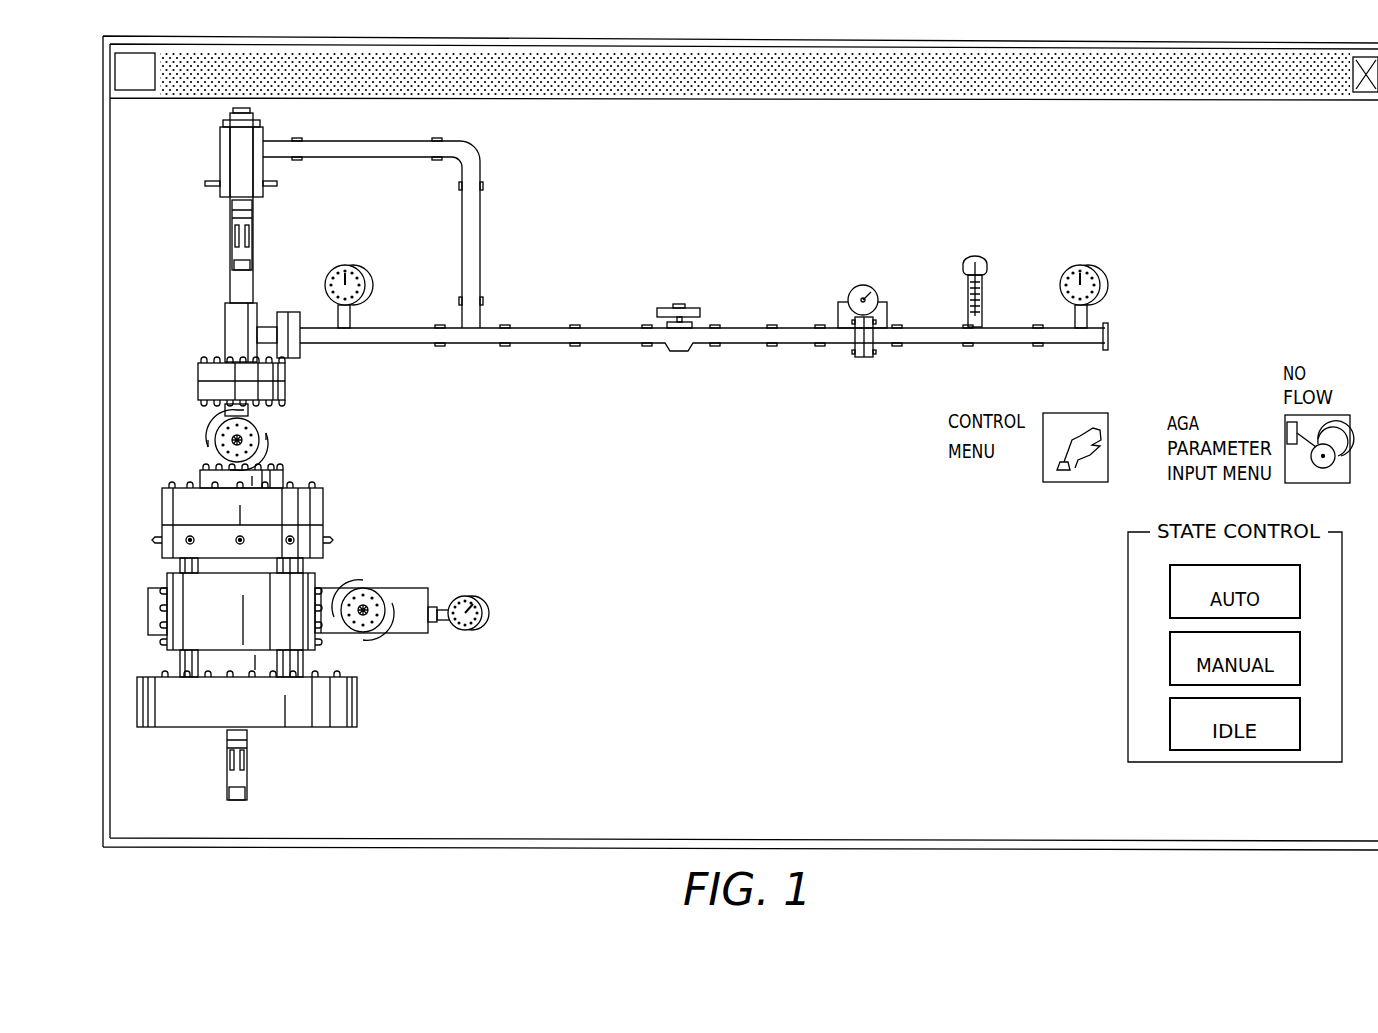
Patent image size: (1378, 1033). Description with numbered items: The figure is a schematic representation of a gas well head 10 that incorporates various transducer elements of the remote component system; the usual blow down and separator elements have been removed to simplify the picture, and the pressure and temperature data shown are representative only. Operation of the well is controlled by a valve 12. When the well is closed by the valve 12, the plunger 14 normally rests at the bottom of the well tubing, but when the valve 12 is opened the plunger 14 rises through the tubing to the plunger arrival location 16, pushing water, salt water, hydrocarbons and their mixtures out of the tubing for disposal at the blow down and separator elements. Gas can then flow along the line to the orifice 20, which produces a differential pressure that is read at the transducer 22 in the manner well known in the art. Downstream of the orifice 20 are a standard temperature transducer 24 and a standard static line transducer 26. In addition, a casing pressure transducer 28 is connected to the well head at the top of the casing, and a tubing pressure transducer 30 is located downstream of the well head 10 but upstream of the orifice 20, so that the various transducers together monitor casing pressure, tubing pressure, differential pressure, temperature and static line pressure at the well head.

The gas well head 10 is at (345, 474).
The valve 12 is at (666, 342).
The plunger 14 is at (248, 762).
The plunger arrival location 16 is at (222, 232).
The orifice 20 is at (864, 359).
The transducer 22 is at (856, 288).
The temperature transducer 24 is at (975, 257).
The static line transducer 26 is at (1098, 270).
The casing pressure transducer 28 is at (478, 602).
The tubing pressure transducer 30 is at (346, 265).